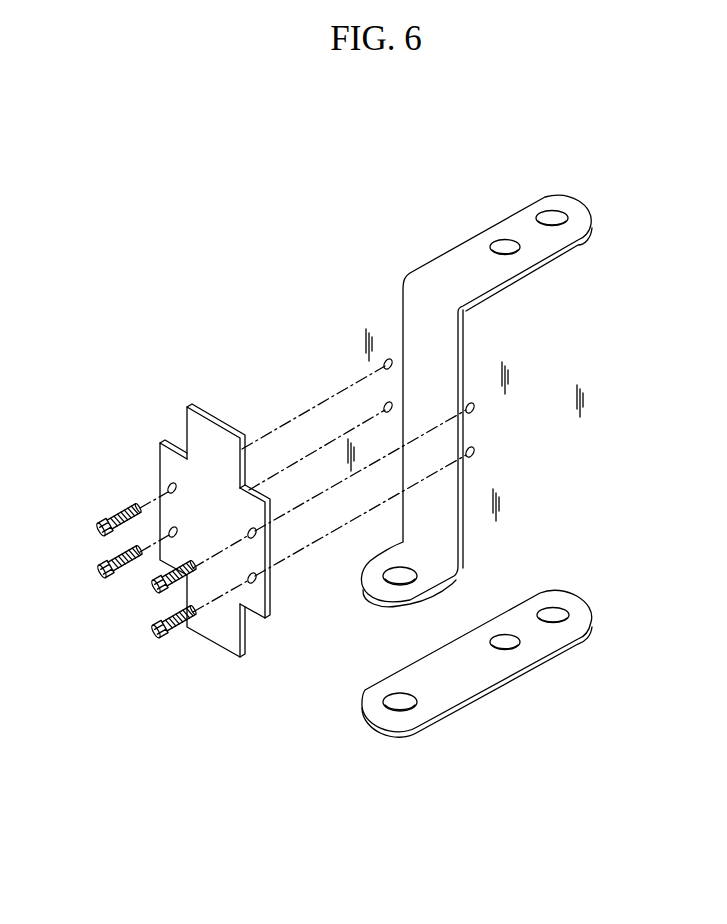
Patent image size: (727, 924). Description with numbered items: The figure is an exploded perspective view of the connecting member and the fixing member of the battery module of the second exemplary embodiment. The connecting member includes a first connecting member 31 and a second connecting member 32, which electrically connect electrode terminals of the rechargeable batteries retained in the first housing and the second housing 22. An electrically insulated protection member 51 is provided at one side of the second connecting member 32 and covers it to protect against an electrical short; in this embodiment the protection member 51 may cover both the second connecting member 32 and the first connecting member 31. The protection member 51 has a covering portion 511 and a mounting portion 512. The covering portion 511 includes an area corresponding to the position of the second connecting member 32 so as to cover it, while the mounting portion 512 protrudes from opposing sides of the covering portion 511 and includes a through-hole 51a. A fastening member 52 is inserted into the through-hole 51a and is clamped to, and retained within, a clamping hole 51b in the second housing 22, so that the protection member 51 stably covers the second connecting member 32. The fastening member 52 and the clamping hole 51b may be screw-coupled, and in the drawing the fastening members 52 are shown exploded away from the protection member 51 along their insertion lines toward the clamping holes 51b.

The second housing 22 is at (558, 353).
The first connecting member 31 is at (466, 692).
The second connecting member 32 is at (392, 311).
The protection member 51 is at (195, 516).
The covering portion 511 is at (188, 426).
The mounting portion 512 is at (262, 616).
The through-hole 51a is at (168, 528).
The clamping hole 51b is at (476, 452).
The fastening member 52 is at (102, 570).